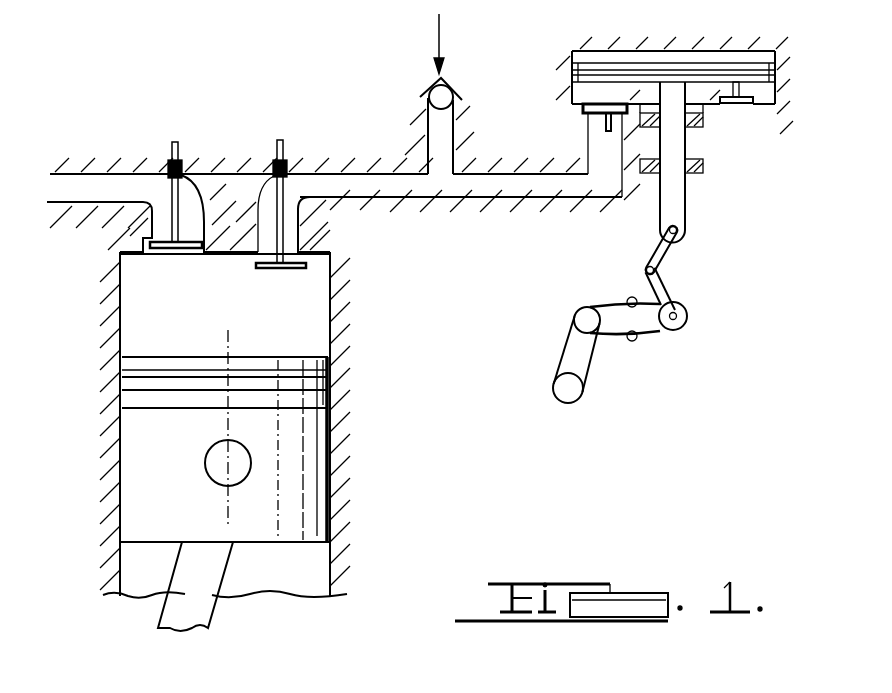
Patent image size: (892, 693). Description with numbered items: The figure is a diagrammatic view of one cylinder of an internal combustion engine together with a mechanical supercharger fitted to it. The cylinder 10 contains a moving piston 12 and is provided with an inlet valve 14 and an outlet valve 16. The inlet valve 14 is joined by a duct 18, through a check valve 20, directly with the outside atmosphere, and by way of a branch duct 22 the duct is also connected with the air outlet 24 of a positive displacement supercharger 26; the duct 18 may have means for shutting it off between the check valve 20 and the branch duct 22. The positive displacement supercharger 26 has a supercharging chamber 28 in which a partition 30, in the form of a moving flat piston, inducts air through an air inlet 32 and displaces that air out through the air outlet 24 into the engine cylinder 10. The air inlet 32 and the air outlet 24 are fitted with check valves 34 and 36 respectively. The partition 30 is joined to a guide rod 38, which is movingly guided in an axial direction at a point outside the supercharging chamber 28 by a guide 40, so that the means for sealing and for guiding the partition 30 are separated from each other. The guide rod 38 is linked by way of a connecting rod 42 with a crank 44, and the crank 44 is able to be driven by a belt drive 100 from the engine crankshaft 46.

The cylinder 10 is at (334, 424).
The piston 12 is at (297, 467).
The inlet valve 14 is at (270, 266).
The outlet valve 16 is at (181, 252).
The duct 18 is at (514, 188).
The check valve 20 is at (431, 88).
The branch duct 22 is at (442, 185).
The air outlet 24 is at (608, 114).
The positive displacement supercharger 26 is at (572, 56).
The supercharging chamber 28 is at (617, 94).
The partition 30 is at (653, 68).
The air inlet 32 is at (718, 103).
The check valve 34 is at (740, 92).
The check valve 36 is at (600, 133).
The guide rod 38 is at (418, 194).
The guide 40 is at (705, 167).
The connecting rod 42 is at (660, 246).
The crank 44 is at (660, 296).
The engine crankshaft 46 is at (571, 352).
The belt drive 100 is at (656, 336).